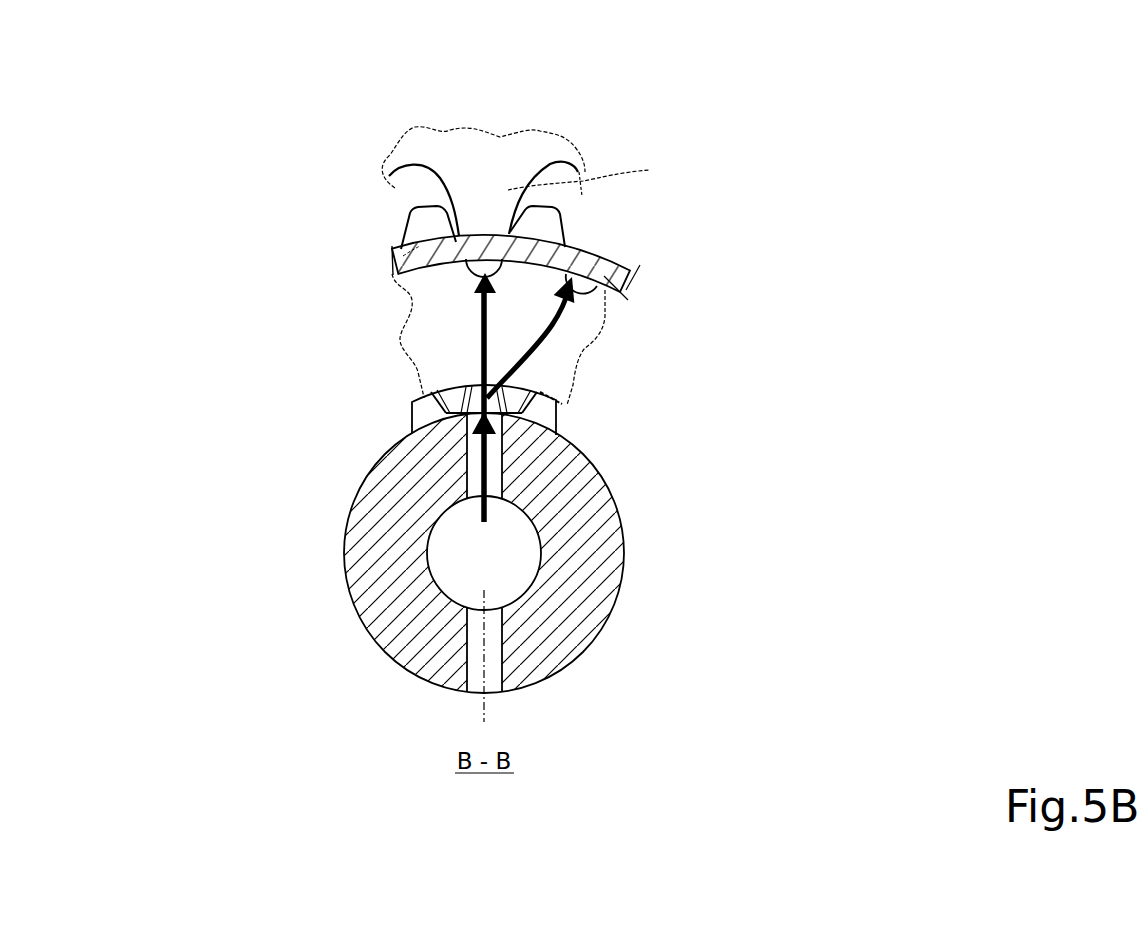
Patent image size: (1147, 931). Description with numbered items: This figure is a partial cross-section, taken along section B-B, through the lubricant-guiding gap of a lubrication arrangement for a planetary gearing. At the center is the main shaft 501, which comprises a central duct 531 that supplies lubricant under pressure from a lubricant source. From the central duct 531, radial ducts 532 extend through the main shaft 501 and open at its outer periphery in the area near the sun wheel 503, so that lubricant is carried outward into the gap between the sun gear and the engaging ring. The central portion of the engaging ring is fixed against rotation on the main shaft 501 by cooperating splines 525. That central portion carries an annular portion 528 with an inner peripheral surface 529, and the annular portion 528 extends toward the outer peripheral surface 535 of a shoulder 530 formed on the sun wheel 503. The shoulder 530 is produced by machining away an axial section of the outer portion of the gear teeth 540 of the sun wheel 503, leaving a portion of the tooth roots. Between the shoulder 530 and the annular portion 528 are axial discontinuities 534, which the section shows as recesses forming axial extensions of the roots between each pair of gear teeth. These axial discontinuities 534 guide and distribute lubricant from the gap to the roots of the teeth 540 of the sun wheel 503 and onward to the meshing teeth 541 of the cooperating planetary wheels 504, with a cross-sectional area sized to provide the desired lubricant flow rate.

The main shaft 501 is at (588, 613).
The sun wheel 503 is at (577, 338).
The planetary wheels 504 is at (548, 138).
The splines 525 is at (410, 413).
The annular portion 528 is at (628, 299).
The inner peripheral surface 529 is at (392, 275).
The shoulder 530 is at (419, 259).
The central duct 531 is at (461, 570).
The radial ducts 532 is at (506, 472).
The axial discontinuities 534 is at (463, 279).
The outer peripheral surface 535 is at (587, 252).
The teeth of the sun gear 540 is at (547, 228).
The teeth of the planetary gears 541 is at (583, 177).